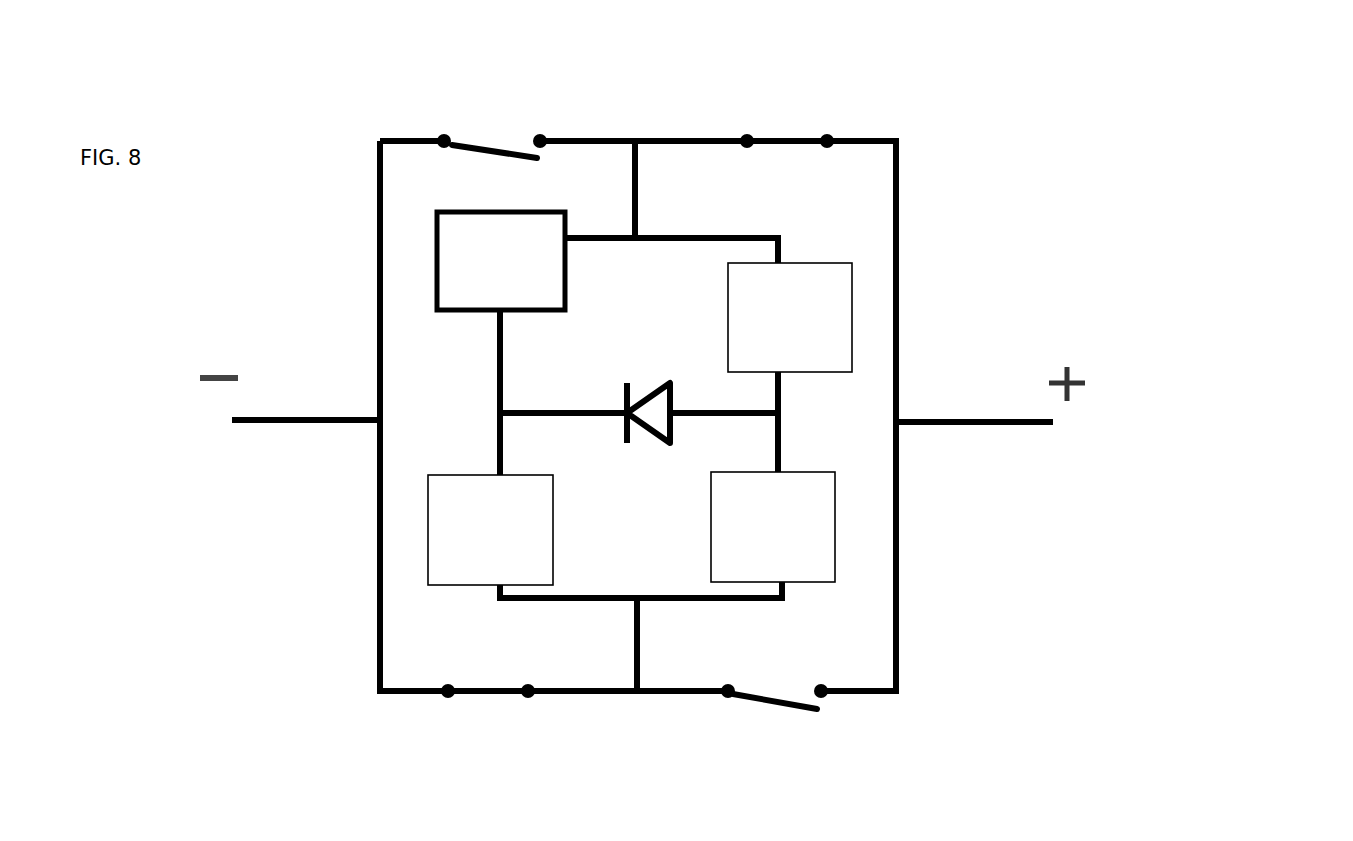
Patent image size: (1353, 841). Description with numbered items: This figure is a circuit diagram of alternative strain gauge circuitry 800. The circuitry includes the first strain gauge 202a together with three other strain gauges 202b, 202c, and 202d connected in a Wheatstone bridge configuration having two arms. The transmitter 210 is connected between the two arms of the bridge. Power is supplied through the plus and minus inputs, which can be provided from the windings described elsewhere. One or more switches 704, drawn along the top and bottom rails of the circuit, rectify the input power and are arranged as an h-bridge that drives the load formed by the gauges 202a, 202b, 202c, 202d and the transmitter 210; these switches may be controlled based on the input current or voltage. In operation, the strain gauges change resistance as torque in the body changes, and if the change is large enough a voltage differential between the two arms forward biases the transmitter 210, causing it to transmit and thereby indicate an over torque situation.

The strain gauge circuitry 800 is at (1075, 241).
The switches 704 is at (492, 140).
The first strain gauge 202a is at (501, 261).
The strain gauge 202b is at (790, 317).
The strain gauge 202c is at (490, 530).
The strain gauge 202d is at (773, 527).
The transmitter 210 is at (661, 381).